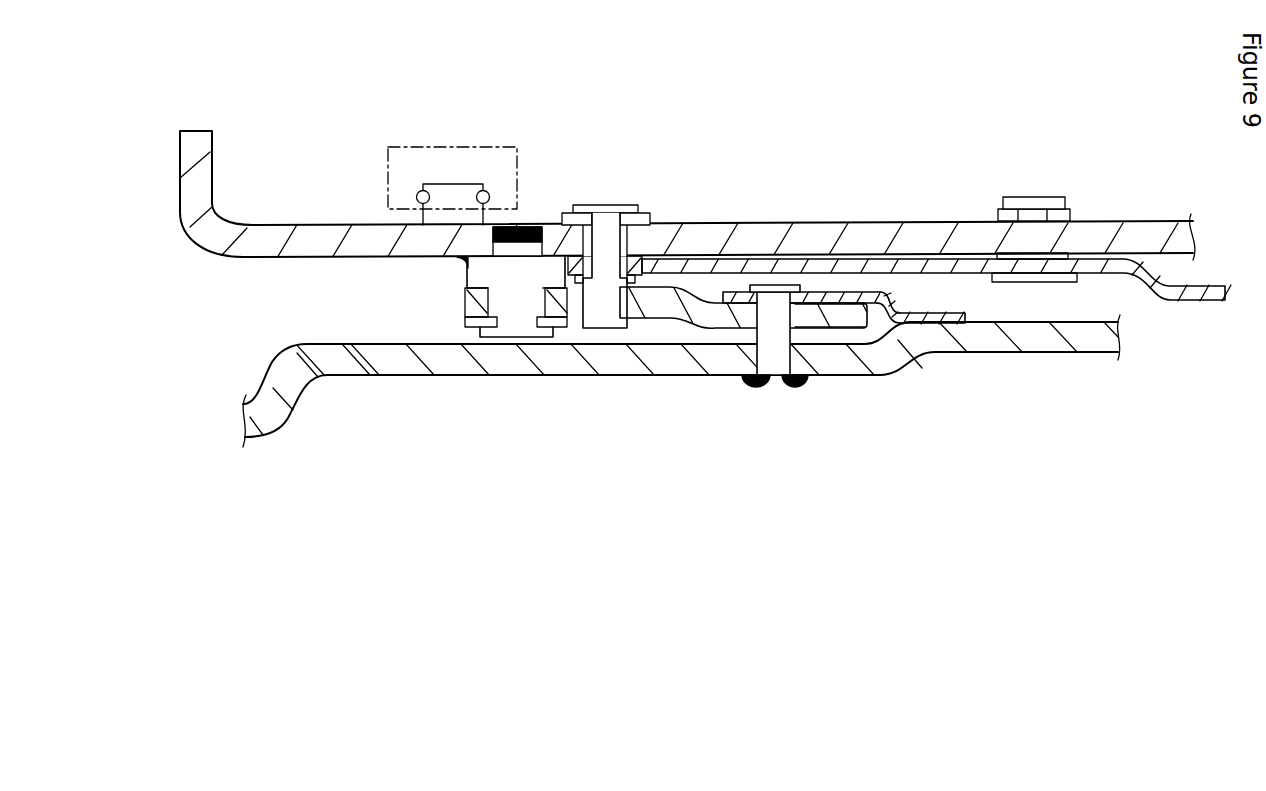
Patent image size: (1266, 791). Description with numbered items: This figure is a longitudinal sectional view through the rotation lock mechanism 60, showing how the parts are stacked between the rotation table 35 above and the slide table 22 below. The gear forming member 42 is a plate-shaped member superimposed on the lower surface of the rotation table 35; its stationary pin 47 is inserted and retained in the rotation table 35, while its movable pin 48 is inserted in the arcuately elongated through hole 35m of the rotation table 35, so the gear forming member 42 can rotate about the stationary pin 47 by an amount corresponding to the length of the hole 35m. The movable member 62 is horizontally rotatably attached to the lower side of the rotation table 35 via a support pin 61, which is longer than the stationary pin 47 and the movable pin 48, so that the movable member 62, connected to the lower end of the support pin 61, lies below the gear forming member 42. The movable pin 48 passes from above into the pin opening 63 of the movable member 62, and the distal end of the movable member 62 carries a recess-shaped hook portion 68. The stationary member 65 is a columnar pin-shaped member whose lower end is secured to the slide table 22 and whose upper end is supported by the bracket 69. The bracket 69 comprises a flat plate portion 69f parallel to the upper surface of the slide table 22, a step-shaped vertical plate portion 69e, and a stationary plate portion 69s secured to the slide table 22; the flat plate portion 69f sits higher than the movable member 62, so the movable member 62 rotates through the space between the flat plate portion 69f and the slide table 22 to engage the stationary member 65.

The slide table 22 is at (717, 357).
The rotation table 35 is at (832, 237).
The arcuately elongated through hole 35m is at (624, 243).
The gear forming member 42 is at (1118, 275).
The stationary pin 47 is at (1032, 213).
The movable pin 48 is at (600, 293).
The rotation lock mechanism 60 is at (744, 353).
The support pin 61 is at (518, 288).
The movable member 62 is at (681, 322).
The pin opening 63 is at (578, 305).
The stationary member 65 is at (774, 330).
The hook portion 68 is at (786, 320).
The bracket 69 is at (911, 301).
The step-shaped vertical plate portion 69e is at (884, 322).
The flat plate portion 69f is at (815, 297).
The stationary plate portion 69s is at (931, 313).